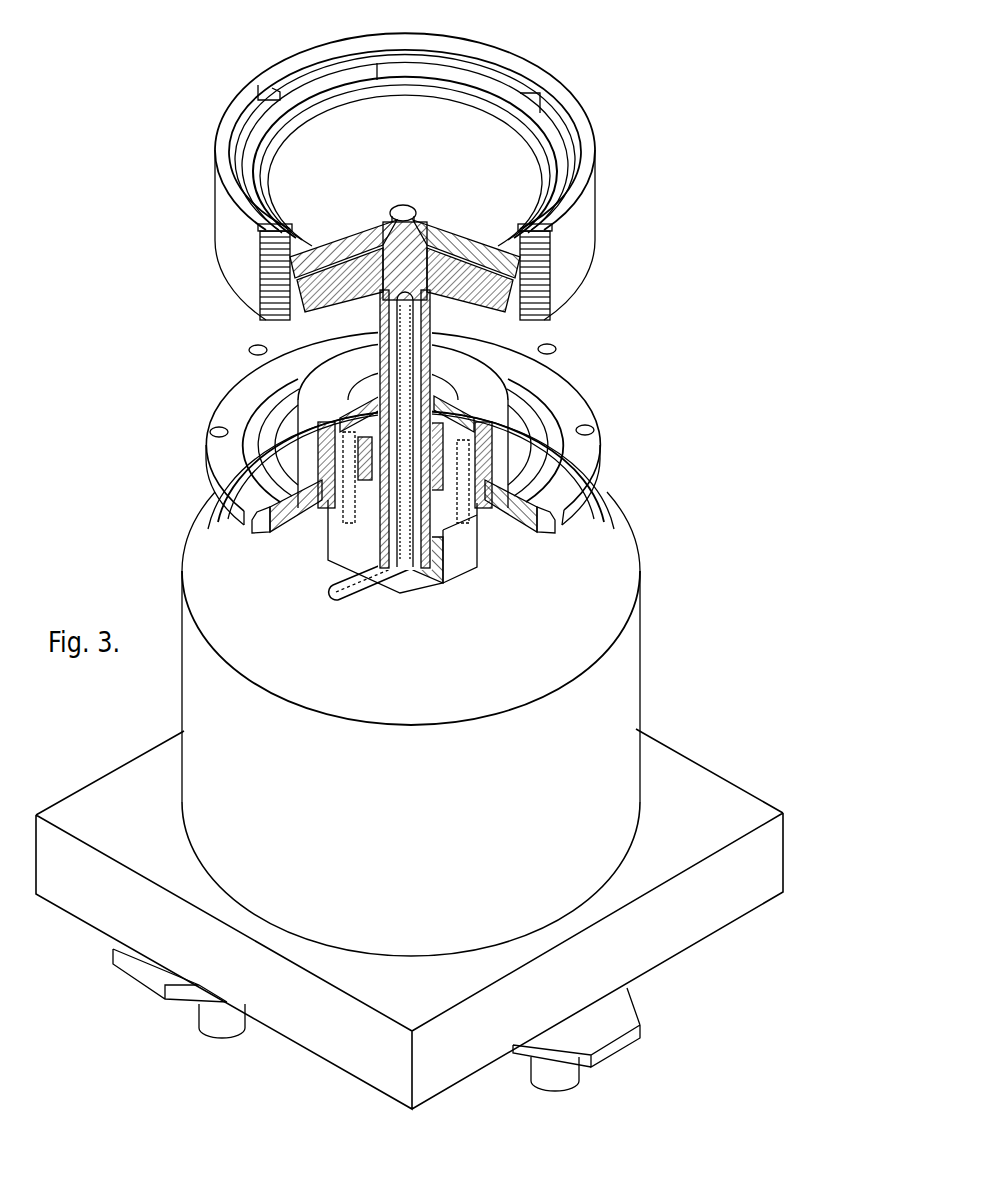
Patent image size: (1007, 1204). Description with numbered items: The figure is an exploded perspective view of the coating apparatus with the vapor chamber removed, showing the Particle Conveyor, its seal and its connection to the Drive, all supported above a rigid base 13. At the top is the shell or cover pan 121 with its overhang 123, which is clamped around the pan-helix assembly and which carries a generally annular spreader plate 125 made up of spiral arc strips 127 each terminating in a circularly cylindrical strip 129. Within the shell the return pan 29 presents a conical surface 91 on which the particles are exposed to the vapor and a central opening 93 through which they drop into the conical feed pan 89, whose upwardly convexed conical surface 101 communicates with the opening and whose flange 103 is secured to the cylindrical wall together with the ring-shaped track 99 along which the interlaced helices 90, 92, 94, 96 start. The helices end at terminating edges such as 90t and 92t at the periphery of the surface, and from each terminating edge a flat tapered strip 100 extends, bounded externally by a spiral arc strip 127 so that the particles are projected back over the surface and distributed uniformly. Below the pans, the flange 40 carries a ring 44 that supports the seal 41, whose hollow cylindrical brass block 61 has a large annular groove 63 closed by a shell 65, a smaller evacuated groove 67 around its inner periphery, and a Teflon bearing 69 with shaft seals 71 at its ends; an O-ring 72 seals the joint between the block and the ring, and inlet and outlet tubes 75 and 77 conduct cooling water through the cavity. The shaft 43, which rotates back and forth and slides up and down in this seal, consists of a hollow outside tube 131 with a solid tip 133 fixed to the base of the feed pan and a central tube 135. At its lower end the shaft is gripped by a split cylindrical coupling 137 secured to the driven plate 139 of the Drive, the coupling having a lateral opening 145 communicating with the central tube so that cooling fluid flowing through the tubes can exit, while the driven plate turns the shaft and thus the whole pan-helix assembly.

The rigid base 13 is at (749, 810).
The return pan 29 is at (407, 180).
The flange 40 is at (422, 466).
The seal 41 is at (434, 278).
The shaft 43 is at (402, 429).
The ring 44 is at (500, 350).
The hollow cylindrical block 61 is at (446, 392).
The annular groove 63 is at (330, 437).
The shell 65 is at (440, 432).
The groove 67 is at (362, 516).
The bearing 69 is at (440, 430).
The shaft seals 71 is at (460, 533).
The O-ring 72 is at (352, 413).
The inlet tube 75 is at (471, 527).
The outlet tube 77 is at (340, 520).
The conical feed pan 89 is at (466, 276).
The helix 90 is at (265, 312).
The terminating edge 90t is at (525, 100).
The conical surface 91 is at (478, 118).
The helix 92 is at (262, 305).
The terminating edge 92t is at (267, 118).
The opening 93 is at (396, 207).
The helix 94 is at (262, 290).
The helix 96 is at (262, 272).
The ring-shaped track 99 is at (274, 318).
The flat tapered strip 100 is at (508, 98).
The conical surface 101 is at (488, 272).
The flange 103 is at (506, 318).
The shell 121 is at (586, 208).
The overhang 123 is at (584, 145).
The spreader plate 125 is at (377, 80).
The spiral arc strip 127 is at (430, 65).
The cylindrical strip 129 is at (315, 88).
The outside tube 131 is at (423, 334).
The solid tip 133 is at (383, 294).
The central tube 135 is at (414, 316).
The split cylindrical coupling 137 is at (428, 572).
The driven plate 139 is at (570, 578).
The lateral opening 145 is at (369, 586).